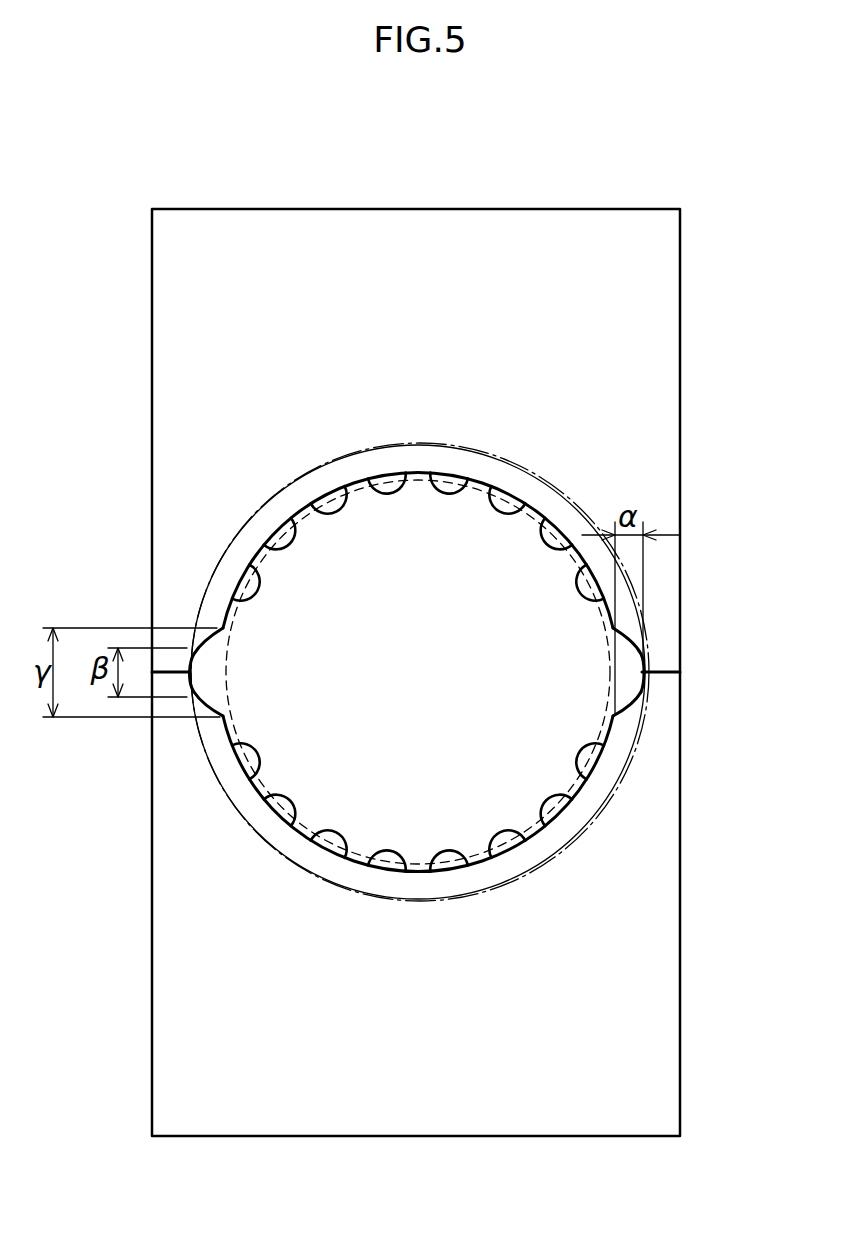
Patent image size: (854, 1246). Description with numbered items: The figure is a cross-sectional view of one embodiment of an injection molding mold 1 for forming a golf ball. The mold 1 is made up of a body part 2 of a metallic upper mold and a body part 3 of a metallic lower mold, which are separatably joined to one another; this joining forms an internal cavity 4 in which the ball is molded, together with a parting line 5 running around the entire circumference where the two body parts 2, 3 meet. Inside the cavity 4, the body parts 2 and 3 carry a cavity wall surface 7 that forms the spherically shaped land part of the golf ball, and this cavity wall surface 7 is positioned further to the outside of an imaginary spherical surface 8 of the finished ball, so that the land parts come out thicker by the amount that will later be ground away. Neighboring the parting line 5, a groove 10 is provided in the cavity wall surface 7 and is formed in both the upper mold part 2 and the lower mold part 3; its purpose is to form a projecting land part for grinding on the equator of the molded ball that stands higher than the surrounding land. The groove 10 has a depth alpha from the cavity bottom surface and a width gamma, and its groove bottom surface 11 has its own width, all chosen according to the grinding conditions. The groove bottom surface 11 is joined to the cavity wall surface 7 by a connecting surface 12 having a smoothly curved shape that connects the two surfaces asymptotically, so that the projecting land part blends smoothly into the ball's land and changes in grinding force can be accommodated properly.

The injection molding mold 1 is at (677, 185).
The body part of upper mold 2 is at (663, 388).
The body part of lower mold 3 is at (660, 1001).
The internal cavity 4 is at (257, 777).
The parting line 5 is at (662, 668).
The cavity wall surface 7 is at (217, 672).
The imaginary spherical surface 8 is at (228, 706).
The groove 10 is at (206, 660).
The groove bottom surface 11 is at (645, 683).
The connecting surface 12 is at (620, 708).